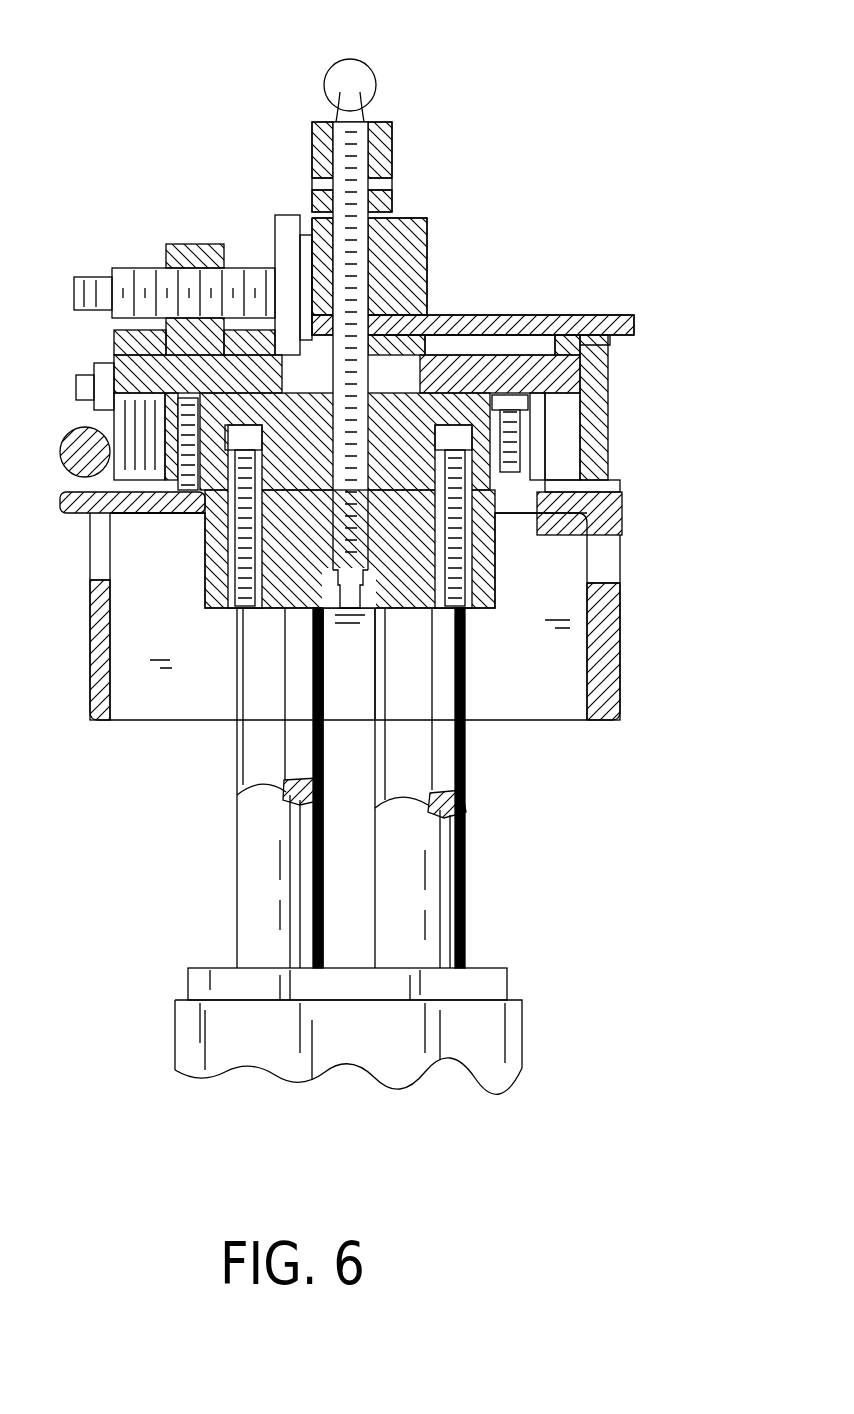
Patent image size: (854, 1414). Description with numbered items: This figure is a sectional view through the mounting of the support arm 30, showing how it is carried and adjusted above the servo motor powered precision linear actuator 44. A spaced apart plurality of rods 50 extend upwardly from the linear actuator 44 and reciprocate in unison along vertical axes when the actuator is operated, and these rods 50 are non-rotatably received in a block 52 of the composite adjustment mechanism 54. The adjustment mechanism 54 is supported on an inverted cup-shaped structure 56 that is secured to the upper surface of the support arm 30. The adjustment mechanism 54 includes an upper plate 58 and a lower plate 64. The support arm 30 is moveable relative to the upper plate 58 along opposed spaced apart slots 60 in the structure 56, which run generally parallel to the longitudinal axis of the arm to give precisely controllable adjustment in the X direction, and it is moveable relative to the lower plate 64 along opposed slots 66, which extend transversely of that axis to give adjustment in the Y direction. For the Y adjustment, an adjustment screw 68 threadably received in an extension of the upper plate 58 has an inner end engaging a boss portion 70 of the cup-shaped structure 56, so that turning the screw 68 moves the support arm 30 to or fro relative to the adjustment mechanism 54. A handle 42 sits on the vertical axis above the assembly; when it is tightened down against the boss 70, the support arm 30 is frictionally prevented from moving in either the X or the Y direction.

The support arm 30 is at (623, 630).
The handle 42 is at (370, 70).
The linear actuator 44 is at (175, 1048).
The rods 50 is at (238, 858).
The block 52 is at (205, 548).
The adjustment mechanism 54 is at (505, 535).
The cup-shaped structure 56 is at (608, 420).
The upper plate 58 is at (537, 375).
The slots 60 is at (114, 350).
The lower plate 64 is at (453, 403).
The slots 66 is at (520, 420).
The adjustment screw 68 is at (125, 265).
The boss portion 70 is at (432, 232).